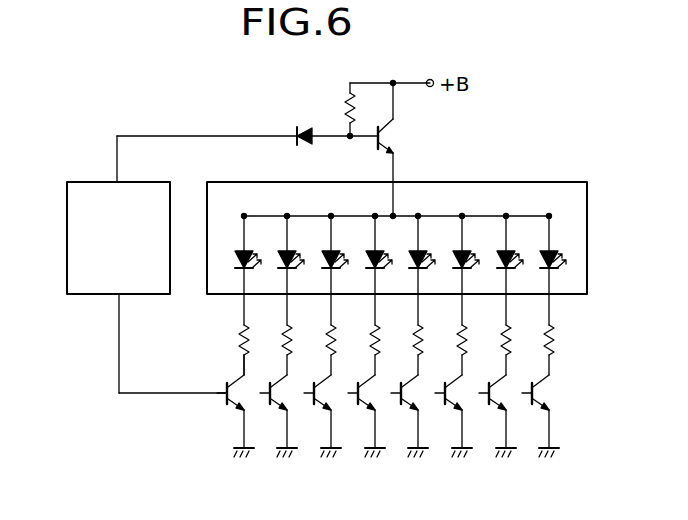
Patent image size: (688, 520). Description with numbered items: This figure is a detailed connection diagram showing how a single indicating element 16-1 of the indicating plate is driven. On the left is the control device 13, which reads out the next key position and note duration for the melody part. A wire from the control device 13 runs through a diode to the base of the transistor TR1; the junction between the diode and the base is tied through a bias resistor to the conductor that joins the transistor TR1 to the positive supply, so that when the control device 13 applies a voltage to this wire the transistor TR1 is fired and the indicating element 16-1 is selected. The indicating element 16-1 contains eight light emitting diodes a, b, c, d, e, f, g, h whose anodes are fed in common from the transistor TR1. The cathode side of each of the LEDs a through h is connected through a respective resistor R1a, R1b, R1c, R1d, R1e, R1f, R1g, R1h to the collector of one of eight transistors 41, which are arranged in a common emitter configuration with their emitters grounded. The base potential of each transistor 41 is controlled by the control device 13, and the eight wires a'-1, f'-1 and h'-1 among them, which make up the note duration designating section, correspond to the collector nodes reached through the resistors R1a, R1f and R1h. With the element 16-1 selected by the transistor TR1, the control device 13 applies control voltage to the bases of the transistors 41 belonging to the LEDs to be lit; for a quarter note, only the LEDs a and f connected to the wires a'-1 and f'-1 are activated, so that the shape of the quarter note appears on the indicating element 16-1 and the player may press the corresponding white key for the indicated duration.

The control device 13 is at (158, 181).
The indicating element 16-1 is at (508, 181).
The transistor TR1 is at (396, 137).
The transistor 41 is at (227, 402).
The resistor R1a is at (243, 351).
The resistor R1b is at (286, 351).
The resistor R1c is at (330, 351).
The resistor R1d is at (374, 351).
The resistor R1e is at (417, 351).
The resistor R1f is at (461, 351).
The resistor R1g is at (505, 351).
The resistor R1h is at (548, 351).
The LED a is at (249, 270).
The LED b is at (292, 270).
The LED c is at (335, 270).
The LED d is at (380, 270).
The LED e is at (423, 270).
The LED f is at (466, 270).
The LED g is at (511, 270).
The LED h is at (554, 270).
The wire a'-1 is at (204, 372).
The wire f'-1 is at (471, 419).
The wire h'-1 is at (563, 406).